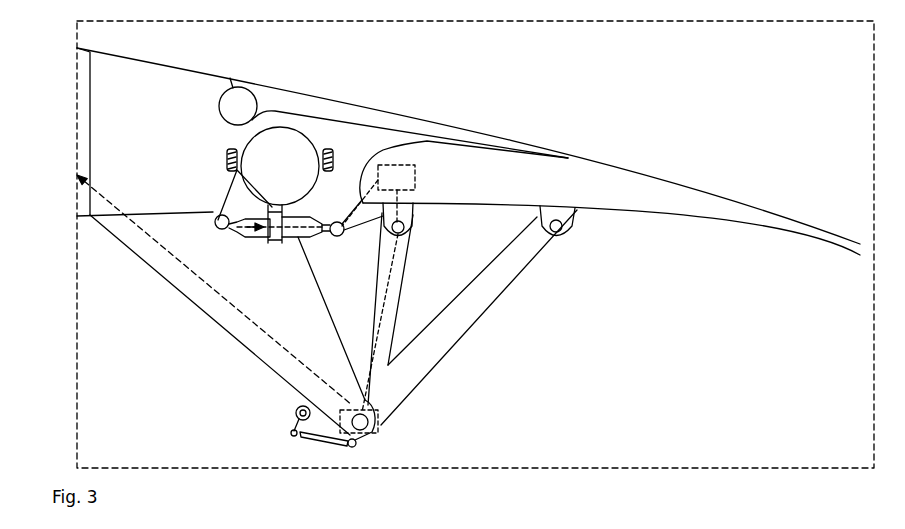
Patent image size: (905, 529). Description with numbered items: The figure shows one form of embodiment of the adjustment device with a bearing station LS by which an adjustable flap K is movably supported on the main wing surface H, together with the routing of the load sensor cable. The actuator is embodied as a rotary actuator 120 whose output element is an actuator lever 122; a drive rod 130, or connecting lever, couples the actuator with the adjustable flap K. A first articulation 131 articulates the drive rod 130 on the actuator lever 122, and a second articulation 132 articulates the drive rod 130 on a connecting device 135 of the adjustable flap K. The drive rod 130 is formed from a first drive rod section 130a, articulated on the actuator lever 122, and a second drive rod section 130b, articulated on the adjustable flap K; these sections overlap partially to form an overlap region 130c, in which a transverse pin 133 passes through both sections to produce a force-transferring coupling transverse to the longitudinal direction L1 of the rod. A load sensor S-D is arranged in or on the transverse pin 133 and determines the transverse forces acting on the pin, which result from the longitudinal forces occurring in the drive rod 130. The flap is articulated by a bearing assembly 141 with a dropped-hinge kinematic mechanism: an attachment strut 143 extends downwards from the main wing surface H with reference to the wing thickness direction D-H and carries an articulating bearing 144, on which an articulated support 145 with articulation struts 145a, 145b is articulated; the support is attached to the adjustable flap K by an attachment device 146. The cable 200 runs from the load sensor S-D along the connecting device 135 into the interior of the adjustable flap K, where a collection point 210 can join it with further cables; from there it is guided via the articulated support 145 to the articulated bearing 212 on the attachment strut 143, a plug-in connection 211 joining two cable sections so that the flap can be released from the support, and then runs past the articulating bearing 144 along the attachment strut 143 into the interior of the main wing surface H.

The rotary actuator 120 is at (293, 137).
The actuator lever 122 is at (233, 193).
The drive rod 130 is at (223, 261).
The first drive rod section 130a is at (258, 240).
The second drive rod section 130b is at (293, 238).
The overlap region 130c is at (268, 250).
The first articulation 131 is at (215, 224).
The second articulation 132 is at (342, 238).
The transverse pin 133 is at (280, 208).
The connecting device 135 is at (349, 204).
The bearing assembly 141 is at (624, 286).
The attachment strut 143 is at (272, 358).
The articulating bearing 144 is at (370, 433).
The articulated support 145 is at (497, 317).
The articulation strut 145a is at (395, 292).
The articulation strut 145b is at (457, 343).
The attachment device 146 is at (609, 231).
The cable 200 is at (165, 257).
The collection point 210 is at (408, 172).
The plug-in connection 211 is at (413, 216).
The articulated bearing 212 is at (380, 417).
The main wing surface H is at (98, 114).
The adjustable flap K is at (642, 187).
The bearing station LS is at (692, 318).
The wing thickness direction D-H is at (60, 115).
The longitudinal direction L1 is at (208, 264).
The load sensor S-D is at (285, 249).